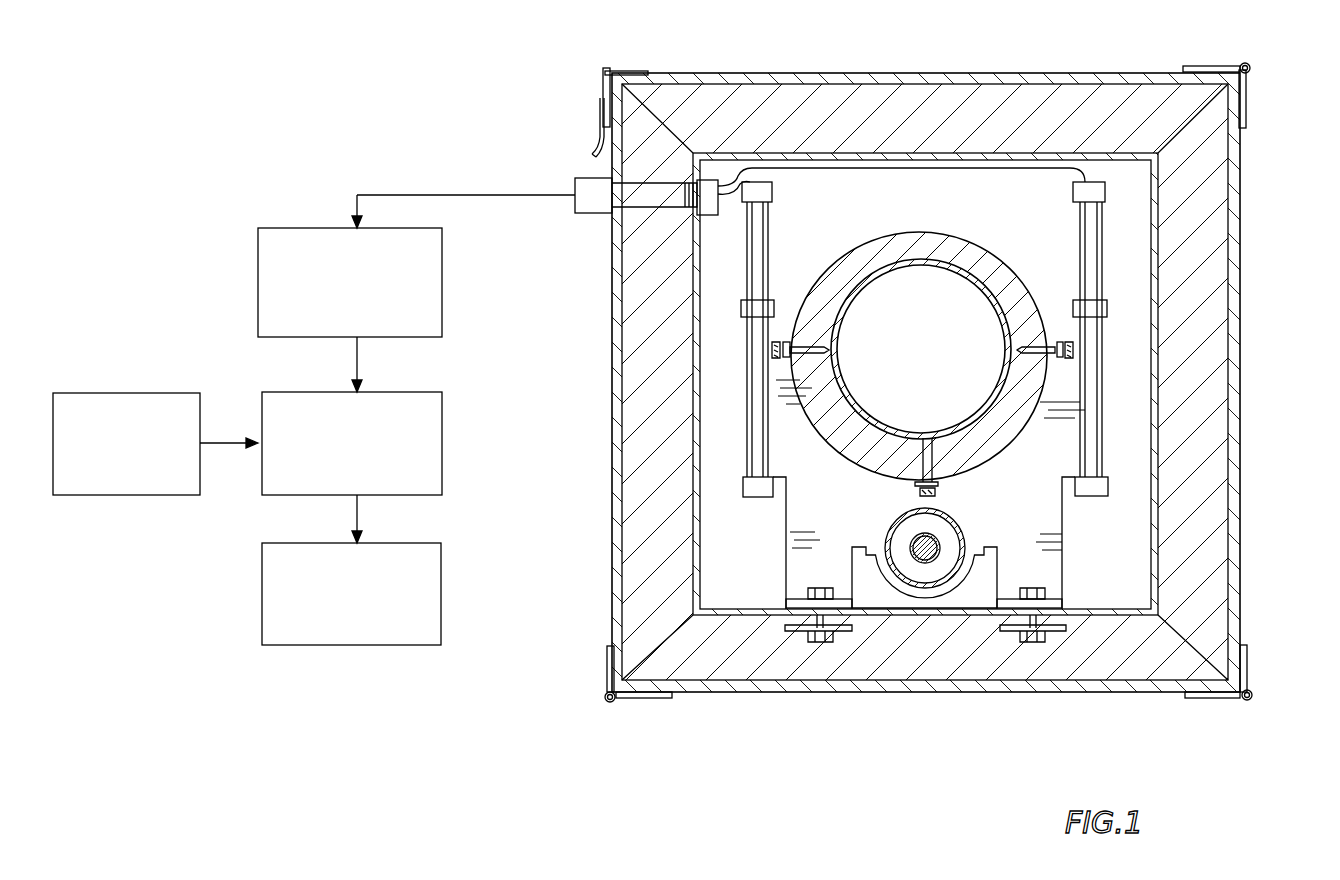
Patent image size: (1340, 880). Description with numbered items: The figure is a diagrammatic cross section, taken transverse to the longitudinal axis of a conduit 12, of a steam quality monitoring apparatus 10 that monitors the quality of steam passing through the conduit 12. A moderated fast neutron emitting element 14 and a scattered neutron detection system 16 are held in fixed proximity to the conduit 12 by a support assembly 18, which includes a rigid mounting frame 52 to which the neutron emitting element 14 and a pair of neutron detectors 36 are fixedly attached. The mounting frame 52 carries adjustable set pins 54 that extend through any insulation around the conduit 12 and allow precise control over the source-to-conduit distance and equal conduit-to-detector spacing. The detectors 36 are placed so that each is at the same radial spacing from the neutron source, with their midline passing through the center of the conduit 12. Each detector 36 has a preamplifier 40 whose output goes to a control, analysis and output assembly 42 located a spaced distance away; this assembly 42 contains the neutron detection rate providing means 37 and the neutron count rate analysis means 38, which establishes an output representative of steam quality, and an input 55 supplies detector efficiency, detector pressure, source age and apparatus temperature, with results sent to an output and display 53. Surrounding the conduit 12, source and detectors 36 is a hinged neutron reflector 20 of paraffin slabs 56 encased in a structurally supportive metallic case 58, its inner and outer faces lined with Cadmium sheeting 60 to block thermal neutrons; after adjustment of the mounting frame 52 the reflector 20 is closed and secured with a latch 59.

The steam quality monitoring apparatus 10 is at (1272, 116).
The conduit 12 is at (966, 272).
The moderated fast neutron emitting element 14 is at (960, 529).
The scattered neutron detection system 16 is at (732, 247).
The support assembly 18 is at (1062, 516).
The neutron reflector 20 is at (1205, 481).
The neutron detectors 36 is at (757, 373).
The neutron detection rate providing means 37 is at (442, 290).
The neutron count rate analysis means 38 is at (442, 476).
The preamplifier 40 is at (772, 191).
The control, analysis and output assembly 42 is at (208, 298).
The rigid mounting frame 52 is at (858, 508).
The output and display 53 is at (441, 614).
The set pins 54 is at (795, 345).
The input 55 is at (122, 496).
The lead shield 56 is at (886, 103).
The metallic case 58 is at (1242, 262).
The latch 59 is at (603, 88).
The Cadmium sheeting 60 is at (700, 540).